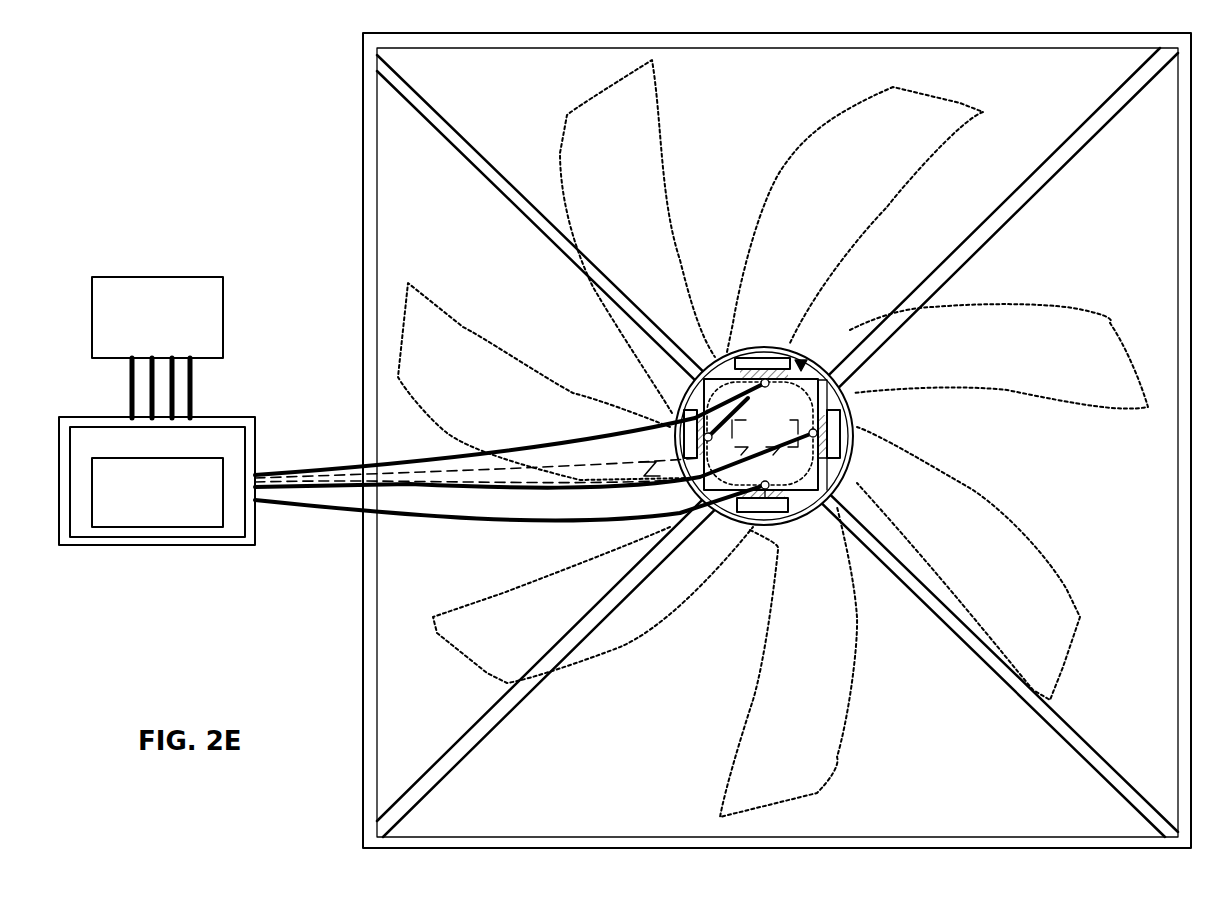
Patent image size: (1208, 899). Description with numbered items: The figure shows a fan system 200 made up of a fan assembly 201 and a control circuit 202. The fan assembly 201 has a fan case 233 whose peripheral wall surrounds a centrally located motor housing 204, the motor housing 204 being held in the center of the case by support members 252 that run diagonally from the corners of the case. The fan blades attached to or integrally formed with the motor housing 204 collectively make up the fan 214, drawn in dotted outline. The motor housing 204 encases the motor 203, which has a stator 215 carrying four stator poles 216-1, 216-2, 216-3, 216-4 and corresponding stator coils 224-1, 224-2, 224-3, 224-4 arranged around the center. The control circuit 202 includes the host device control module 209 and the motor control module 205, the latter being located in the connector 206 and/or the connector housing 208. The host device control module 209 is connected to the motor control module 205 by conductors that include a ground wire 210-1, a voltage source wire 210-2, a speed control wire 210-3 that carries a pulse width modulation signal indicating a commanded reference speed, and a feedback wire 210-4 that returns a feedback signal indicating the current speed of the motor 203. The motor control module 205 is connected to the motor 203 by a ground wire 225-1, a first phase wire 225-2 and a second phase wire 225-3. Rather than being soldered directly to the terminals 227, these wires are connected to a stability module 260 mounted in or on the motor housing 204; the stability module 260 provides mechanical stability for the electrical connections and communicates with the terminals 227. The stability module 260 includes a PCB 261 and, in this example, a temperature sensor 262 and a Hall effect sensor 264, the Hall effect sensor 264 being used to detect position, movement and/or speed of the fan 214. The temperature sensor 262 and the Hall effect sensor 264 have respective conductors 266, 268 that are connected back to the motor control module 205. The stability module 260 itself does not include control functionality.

The fan system 200 is at (150, 58).
The fan assembly 201 is at (337, 148).
The fan case 233 is at (363, 199).
The support members 252 is at (508, 200).
The host device control module 209 is at (159, 277).
The control circuit 202 is at (263, 320).
The ground wire 210-1 is at (131, 369).
The voltage source wire 210-2 is at (151, 384).
The speed control wire 210-3 is at (172, 402).
The feedback wire 210-4 is at (190, 388).
The connector housing 208 is at (238, 545).
The connector 206 is at (238, 425).
The motor control module 205 is at (160, 527).
The ground wire 225-1 is at (307, 470).
The first phase wire 225-2 is at (412, 490).
The second phase wire 225-3 is at (411, 512).
The conductor 268 is at (640, 491).
The conductor 266 is at (632, 468).
The fan 214 is at (978, 110).
The stability module 260 is at (720, 353).
The motor 203 is at (808, 356).
The motor housing 204 is at (723, 377).
The stator pole 216-1 is at (740, 357).
The stator pole 216-2 is at (750, 522).
The stator pole 216-3 is at (684, 418).
The stator pole 216-4 is at (842, 407).
The stator coil 224-1 is at (843, 372).
The stator coil 224-2 is at (780, 522).
The stator coil 224-3 is at (675, 410).
The stator coil 224-4 is at (840, 467).
The terminals 227 is at (842, 387).
The PCB 261 is at (840, 477).
The stator 215 is at (767, 525).
The temperature sensor 262 is at (760, 397).
The Hall effect sensor 264 is at (766, 409).